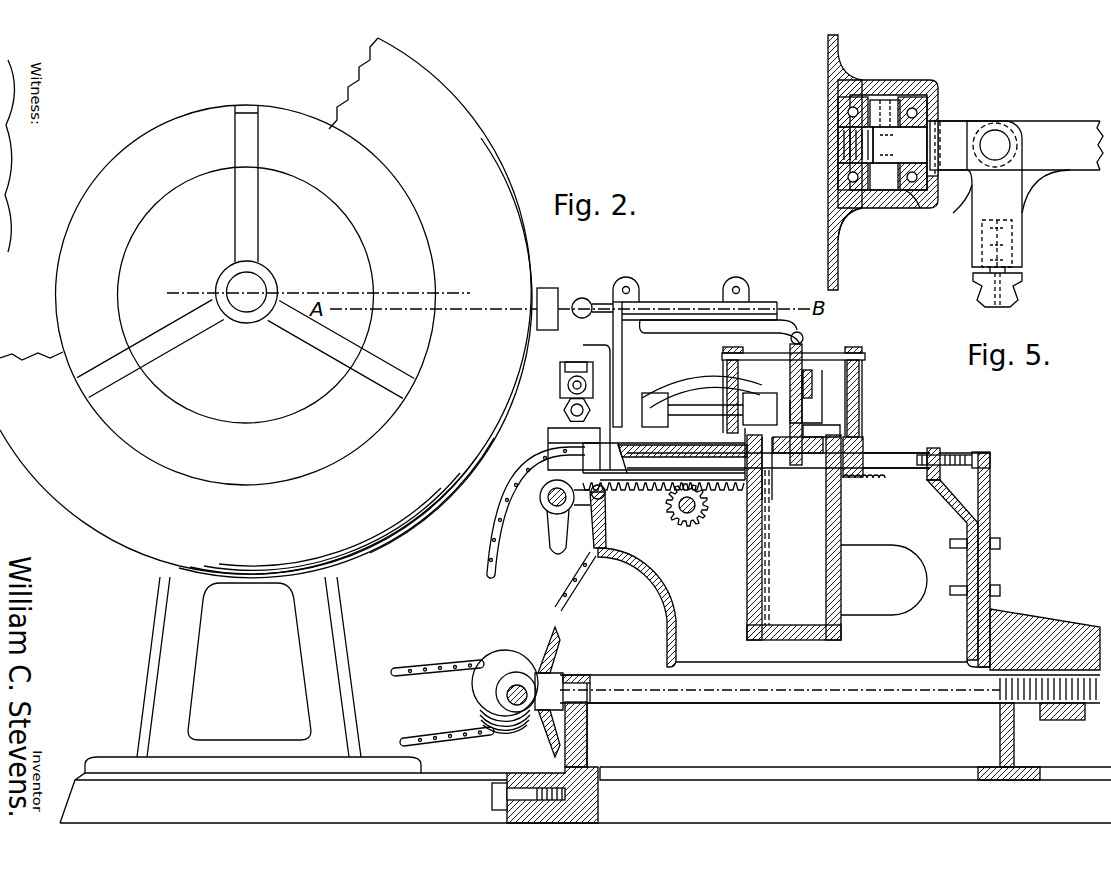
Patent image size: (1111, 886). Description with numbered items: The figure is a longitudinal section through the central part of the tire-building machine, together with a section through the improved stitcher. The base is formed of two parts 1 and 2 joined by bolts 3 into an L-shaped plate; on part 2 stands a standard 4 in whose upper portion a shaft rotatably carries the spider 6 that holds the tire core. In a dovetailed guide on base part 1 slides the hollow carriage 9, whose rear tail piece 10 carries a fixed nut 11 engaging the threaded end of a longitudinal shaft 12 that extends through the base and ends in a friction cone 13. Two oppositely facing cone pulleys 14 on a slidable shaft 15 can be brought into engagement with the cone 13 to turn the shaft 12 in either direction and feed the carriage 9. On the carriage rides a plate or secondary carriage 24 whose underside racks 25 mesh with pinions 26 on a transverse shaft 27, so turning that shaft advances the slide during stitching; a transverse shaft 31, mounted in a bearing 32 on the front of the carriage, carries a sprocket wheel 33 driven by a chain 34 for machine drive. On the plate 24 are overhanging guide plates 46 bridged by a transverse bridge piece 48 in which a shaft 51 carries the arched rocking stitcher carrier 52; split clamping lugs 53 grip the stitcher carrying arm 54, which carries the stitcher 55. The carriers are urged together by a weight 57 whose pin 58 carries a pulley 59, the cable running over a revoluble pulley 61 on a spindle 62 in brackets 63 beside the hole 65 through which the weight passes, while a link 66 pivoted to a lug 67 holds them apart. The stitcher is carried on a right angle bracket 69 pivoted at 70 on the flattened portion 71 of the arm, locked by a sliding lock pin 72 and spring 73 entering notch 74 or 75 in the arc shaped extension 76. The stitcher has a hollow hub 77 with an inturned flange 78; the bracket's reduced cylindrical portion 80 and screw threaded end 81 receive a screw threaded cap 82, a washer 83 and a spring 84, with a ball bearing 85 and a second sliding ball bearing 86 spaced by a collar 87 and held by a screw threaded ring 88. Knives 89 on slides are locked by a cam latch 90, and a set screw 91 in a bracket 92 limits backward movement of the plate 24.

In FIG. 2, the base part 1 is at (855, 791).
In FIG. 2, the base part 2 is at (585, 798).
In FIG. 2, the bolts 3 is at (565, 794).
In FIG. 2, the standard 4 is at (328, 600).
In FIG. 2, the spider 6 is at (250, 148).
In FIG. 2, the hollow carriage 9 is at (664, 603).
In FIG. 2, the tail piece 10 is at (1035, 620).
In FIG. 2, the fixed nut 11 is at (1080, 705).
In FIG. 2, the longitudinal shaft 12 is at (880, 705).
In FIG. 2, the friction cone 13 is at (560, 650).
In FIG. 2, the cone pulleys 14 is at (500, 655).
In FIG. 2, the shaft 15 is at (505, 695).
In FIG. 2, the plate or secondary carriage 24 is at (863, 452).
In FIG. 2, the rack 25 is at (870, 479).
In FIG. 2, the pinions 26 is at (700, 522).
In FIG. 2, the transverse shaft 27 is at (668, 505).
In FIG. 2, the transverse shaft 31 is at (553, 546).
In FIG. 2, the bearing 32 is at (574, 572).
In FIG. 2, the sprocket wheel 33 is at (528, 522).
In FIG. 2, the chain 34 is at (488, 543).
In FIG. 2, the guide plates 46 is at (577, 436).
In FIG. 2, the transverse bridge piece 48 is at (645, 405).
In FIG. 2, the shaft 51 is at (706, 408).
In FIG. 2, the arched rocking stitcher carrier 52 is at (696, 364).
In FIG. 2, the split clamping lugs 53 is at (641, 288).
In FIG. 2, the stitcher carrying arm 54 is at (700, 297).
In FIG. 5, the stitcher carrying arm 54 is at (1050, 120).
In FIG. 5, the stitcher 55 is at (830, 205).
In FIG. 2, the weight 57 is at (843, 581).
In FIG. 2, the pin 58 is at (803, 471).
In FIG. 2, the pulley 59 is at (784, 478).
In FIG. 2, the revoluble pulley 61 is at (788, 338).
In FIG. 2, the spindle 62 is at (866, 356).
In FIG. 2, the brackets 63 is at (728, 378).
In FIG. 2, the hole 65 is at (745, 492).
In FIG. 2, the link 66 is at (813, 376).
In FIG. 2, the lug 67 is at (818, 395).
In FIG. 5, the right angle bracket 69 is at (967, 120).
In FIG. 5, the pivot 70 is at (1000, 130).
In FIG. 2, the flattened portion 71 is at (600, 306).
In FIG. 5, the sliding lock pin 72 is at (1022, 294).
In FIG. 5, the spring 73 is at (1012, 246).
In FIG. 5, the notch 74 is at (1022, 221).
In FIG. 5, the notch 75 is at (965, 241).
In FIG. 5, the arc shaped extension 76 is at (1062, 189).
In FIG. 5, the hollow hub 77 is at (860, 220).
In FIG. 5, the inturned flange 78 is at (940, 88).
In FIG. 5, the reduced cylindrical portion 80 is at (925, 198).
In FIG. 5, the screw threaded end 81 is at (893, 192).
In FIG. 5, the screw threaded cap 82 is at (840, 147).
In FIG. 5, the washer 83 is at (903, 98).
In FIG. 5, the spring 84 is at (883, 100).
In FIG. 5, the ball bearing 85 is at (930, 90).
In FIG. 5, the second sliding ball bearing 86 is at (838, 118).
In FIG. 5, the collar 87 is at (857, 96).
In FIG. 5, the screw threaded ring 88 is at (838, 178).
In FIG. 2, the knives 89 is at (564, 410).
In FIG. 2, the cam latch 90 is at (583, 345).
In FIG. 2, the set screw 91 is at (975, 452).
In FIG. 2, the bracket 92 is at (992, 480).